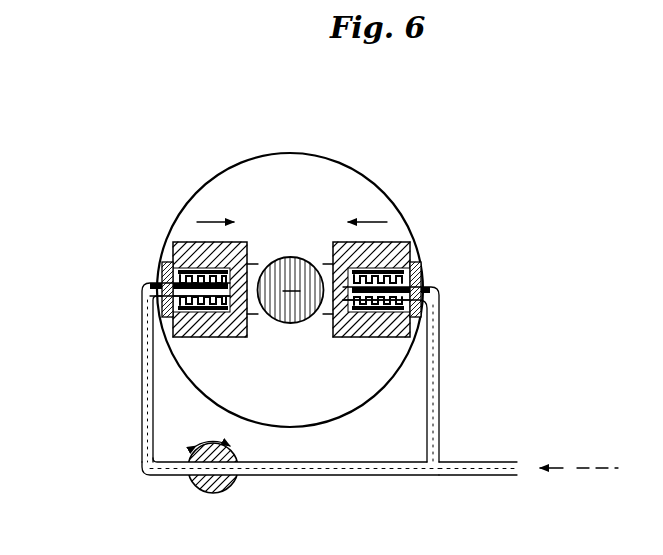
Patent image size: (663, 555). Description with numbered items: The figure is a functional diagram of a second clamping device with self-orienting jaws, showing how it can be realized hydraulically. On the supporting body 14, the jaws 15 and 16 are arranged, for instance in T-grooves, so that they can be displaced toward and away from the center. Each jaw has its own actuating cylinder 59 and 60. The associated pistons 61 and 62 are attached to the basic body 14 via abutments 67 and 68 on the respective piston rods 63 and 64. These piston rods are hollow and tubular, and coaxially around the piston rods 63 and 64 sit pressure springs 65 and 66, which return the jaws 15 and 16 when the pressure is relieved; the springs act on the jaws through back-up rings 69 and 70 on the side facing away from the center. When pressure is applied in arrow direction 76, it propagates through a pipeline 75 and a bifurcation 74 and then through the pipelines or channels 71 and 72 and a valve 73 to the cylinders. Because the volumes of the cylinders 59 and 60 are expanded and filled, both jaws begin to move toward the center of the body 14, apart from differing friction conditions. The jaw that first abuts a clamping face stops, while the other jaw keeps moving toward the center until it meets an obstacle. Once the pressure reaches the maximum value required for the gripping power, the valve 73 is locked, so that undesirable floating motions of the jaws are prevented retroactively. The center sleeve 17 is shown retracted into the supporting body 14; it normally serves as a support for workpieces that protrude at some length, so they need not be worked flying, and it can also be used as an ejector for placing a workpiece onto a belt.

The supporting body 14 is at (304, 162).
The jaw 15 is at (441, 295).
The jaw 16 is at (139, 294).
The center sleeve 17 is at (292, 278).
The actuating cylinder 59 is at (355, 312).
The actuating cylinder 60 is at (240, 312).
The piston 61 is at (375, 318).
The piston 62 is at (212, 316).
The piston rod 63 is at (405, 325).
The piston rod 64 is at (142, 297).
The pressure spring 65 is at (408, 248).
The pressure spring 66 is at (143, 323).
The abutment 67 is at (414, 272).
The abutment 68 is at (175, 273).
The back-up ring 69 is at (403, 260).
The back-up ring 70 is at (175, 262).
The pipeline 71 is at (440, 420).
The pipeline 72 is at (142, 424).
The valve 73 is at (217, 494).
The bifurcation 74 is at (435, 476).
The pipeline 75 is at (484, 476).
The arrow direction 76 is at (550, 470).